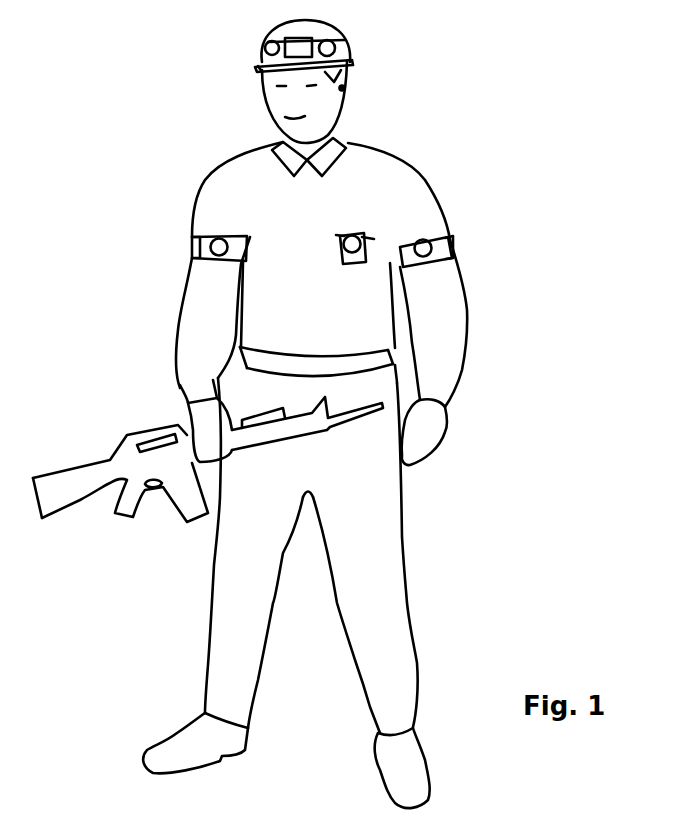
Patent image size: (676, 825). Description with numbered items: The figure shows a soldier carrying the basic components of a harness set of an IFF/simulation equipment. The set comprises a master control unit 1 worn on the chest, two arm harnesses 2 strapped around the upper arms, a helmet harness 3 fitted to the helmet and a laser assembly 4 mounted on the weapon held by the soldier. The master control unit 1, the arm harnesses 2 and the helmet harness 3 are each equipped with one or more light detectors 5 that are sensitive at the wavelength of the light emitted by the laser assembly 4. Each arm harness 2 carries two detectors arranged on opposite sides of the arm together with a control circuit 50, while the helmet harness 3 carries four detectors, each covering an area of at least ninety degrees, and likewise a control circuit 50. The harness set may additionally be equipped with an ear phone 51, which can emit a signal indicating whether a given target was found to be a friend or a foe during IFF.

The master control unit 1 is at (354, 266).
The arm harness 2 is at (200, 254).
The helmet harness 3 is at (342, 68).
The laser assembly 4 is at (261, 416).
The light detector 5 is at (336, 47).
The control circuit 50 is at (268, 72).
The ear phone 51 is at (345, 90).